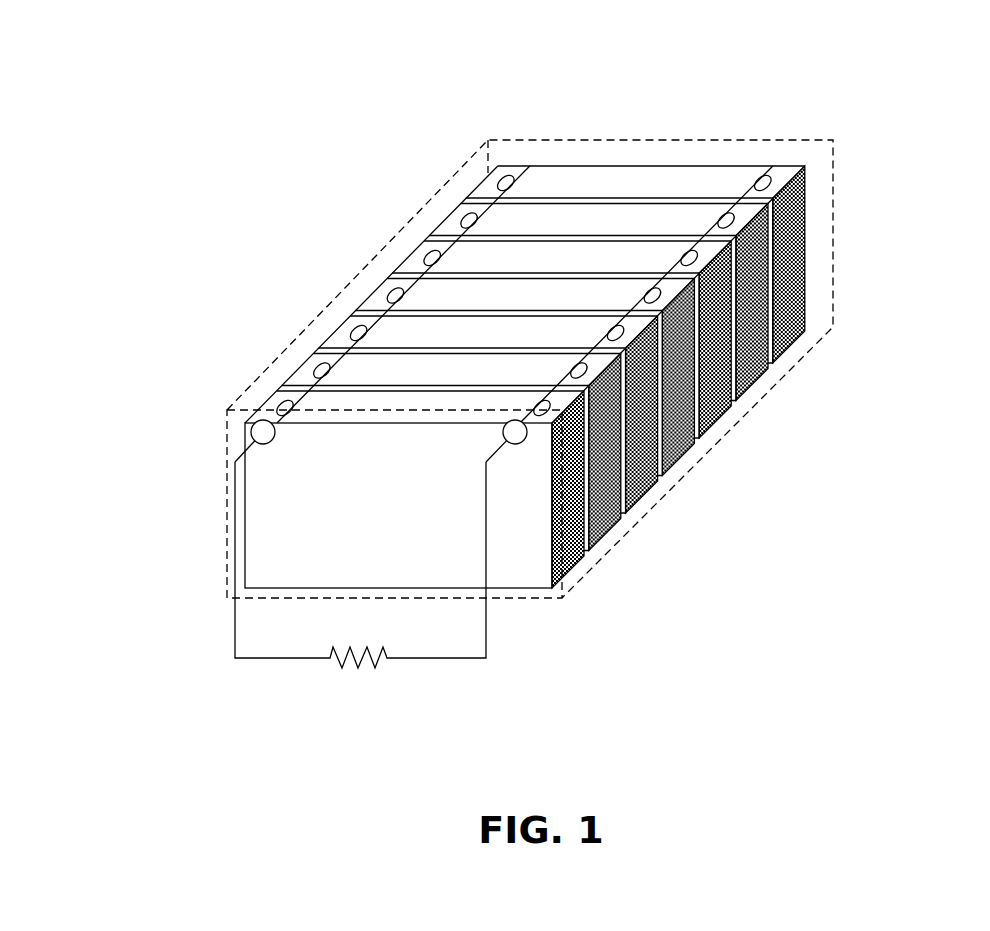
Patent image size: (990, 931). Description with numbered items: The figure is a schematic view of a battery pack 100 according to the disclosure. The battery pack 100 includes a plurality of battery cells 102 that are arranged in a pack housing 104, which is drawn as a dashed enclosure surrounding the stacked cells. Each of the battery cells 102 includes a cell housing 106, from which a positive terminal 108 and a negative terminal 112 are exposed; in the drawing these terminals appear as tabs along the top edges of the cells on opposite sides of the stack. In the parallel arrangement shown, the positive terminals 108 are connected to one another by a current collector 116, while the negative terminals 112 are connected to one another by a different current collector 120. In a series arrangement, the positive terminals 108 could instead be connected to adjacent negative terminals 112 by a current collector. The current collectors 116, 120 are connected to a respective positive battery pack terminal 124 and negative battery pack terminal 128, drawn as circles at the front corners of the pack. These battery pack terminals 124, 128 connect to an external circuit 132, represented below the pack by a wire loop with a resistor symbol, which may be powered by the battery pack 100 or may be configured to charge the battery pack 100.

The battery pack 100 is at (537, 313).
The battery cells 102 is at (564, 377).
The pack housing 104 is at (702, 458).
The cell housing 106 is at (720, 396).
The positive terminal 108 is at (387, 275).
The negative terminal 112 is at (735, 276).
The current collector 116 is at (486, 183).
The current collector 120 is at (800, 175).
The positive battery pack terminal 124 is at (251, 433).
The negative battery pack terminal 128 is at (528, 443).
The external circuit 132 is at (343, 690).